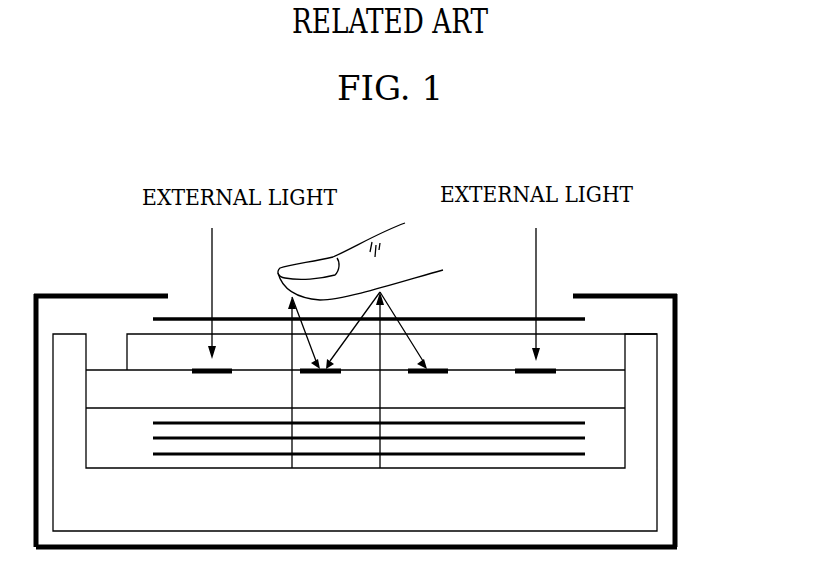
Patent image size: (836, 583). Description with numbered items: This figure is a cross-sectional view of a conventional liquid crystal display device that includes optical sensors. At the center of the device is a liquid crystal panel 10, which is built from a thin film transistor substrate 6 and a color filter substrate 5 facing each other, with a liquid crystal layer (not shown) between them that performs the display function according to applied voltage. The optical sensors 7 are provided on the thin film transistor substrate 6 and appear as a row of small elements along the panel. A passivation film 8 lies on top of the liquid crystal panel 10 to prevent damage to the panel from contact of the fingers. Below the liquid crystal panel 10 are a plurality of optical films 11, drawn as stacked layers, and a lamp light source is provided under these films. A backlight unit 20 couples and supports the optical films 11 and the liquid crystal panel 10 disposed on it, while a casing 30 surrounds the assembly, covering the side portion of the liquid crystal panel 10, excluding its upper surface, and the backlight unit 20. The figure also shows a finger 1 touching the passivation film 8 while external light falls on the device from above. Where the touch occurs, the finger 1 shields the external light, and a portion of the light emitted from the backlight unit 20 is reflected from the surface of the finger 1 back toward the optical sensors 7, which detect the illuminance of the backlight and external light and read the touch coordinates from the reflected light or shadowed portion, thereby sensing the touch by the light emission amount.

The finger 1 is at (393, 225).
The color filter substrate 5 is at (618, 356).
The thin film transistor substrate 6 is at (618, 391).
The optical sensors 7 is at (192, 368).
The passivation film 8 is at (490, 317).
The liquid crystal panel 10 is at (430, 371).
The optical films 11 is at (592, 422).
The backlight unit 20 is at (650, 465).
The casing 30 is at (677, 497).